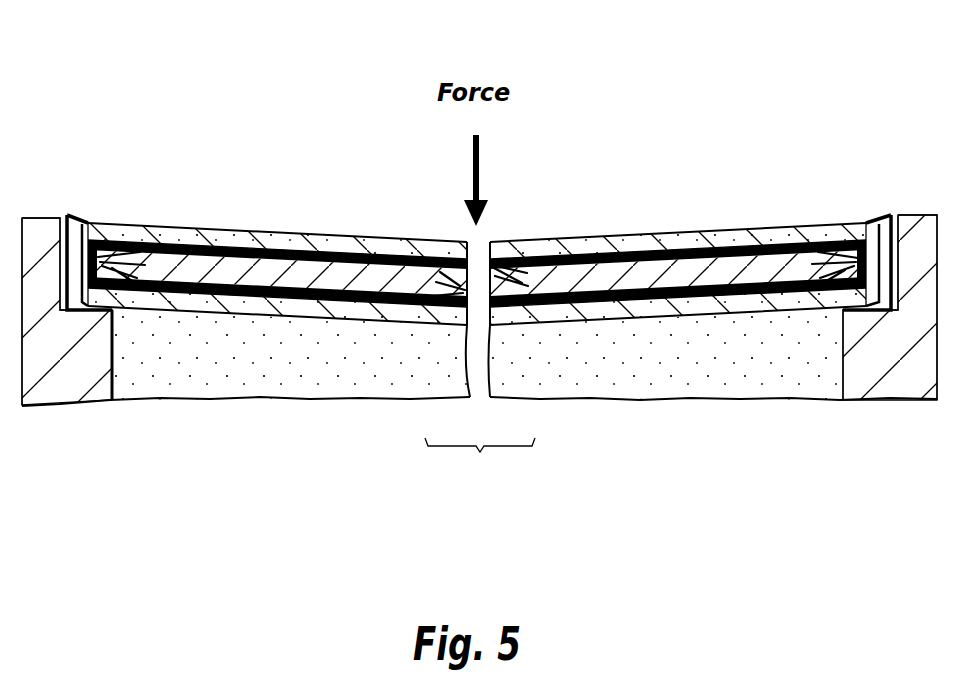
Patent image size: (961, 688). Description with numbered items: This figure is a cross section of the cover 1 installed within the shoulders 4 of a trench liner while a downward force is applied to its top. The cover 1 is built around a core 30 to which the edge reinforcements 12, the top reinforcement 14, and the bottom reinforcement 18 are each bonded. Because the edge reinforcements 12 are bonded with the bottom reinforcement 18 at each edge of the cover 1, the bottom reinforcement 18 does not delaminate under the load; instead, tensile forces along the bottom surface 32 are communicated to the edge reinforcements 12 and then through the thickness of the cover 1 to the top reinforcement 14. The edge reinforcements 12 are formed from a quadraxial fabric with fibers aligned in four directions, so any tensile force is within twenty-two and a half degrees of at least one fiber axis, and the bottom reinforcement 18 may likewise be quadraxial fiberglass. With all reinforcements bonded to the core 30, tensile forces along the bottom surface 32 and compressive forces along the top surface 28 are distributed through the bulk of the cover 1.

The cover 1 is at (156, 118).
The shoulders 4 is at (47, 383).
The edge reinforcements 12 is at (86, 237).
The top reinforcement 14 is at (190, 243).
The bottom reinforcement 18 is at (226, 312).
The top surface 28 is at (728, 230).
The core 30 is at (332, 278).
The bottom surface 32 is at (724, 312).